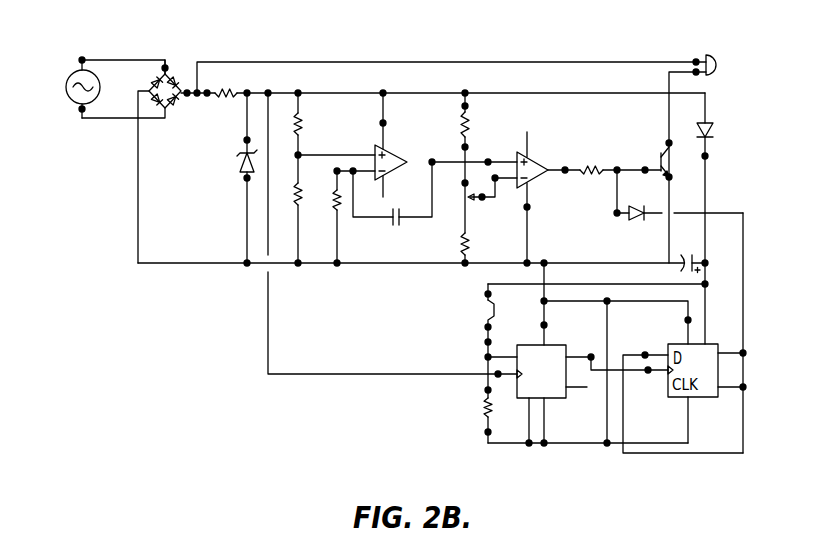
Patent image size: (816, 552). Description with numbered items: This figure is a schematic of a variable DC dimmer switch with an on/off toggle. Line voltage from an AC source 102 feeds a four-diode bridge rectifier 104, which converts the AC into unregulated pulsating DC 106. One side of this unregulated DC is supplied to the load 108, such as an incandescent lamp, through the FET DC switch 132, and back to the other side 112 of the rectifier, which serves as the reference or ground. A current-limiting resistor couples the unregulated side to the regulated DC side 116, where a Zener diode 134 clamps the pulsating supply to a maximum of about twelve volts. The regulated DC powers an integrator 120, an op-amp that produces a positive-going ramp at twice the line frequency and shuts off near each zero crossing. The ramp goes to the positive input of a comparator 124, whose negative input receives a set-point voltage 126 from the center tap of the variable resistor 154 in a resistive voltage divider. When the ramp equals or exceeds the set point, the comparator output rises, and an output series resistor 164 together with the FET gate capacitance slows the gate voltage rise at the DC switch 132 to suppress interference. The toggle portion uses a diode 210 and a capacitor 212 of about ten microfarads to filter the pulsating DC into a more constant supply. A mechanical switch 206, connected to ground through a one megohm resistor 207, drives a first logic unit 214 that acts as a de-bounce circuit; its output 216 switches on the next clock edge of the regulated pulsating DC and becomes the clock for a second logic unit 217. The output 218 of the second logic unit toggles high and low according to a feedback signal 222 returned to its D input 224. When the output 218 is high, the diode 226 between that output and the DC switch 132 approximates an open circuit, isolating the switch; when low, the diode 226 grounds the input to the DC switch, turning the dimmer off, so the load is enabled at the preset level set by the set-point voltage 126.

The AC source 102 is at (71, 69).
The bridge rectifier 104 is at (186, 53).
The unregulated pulsating DC 106 is at (458, 61).
The load 108 is at (718, 57).
The other side of the bridge rectifier 112 is at (178, 265).
The regulated DC side 116 is at (540, 93).
The integrator 120 is at (410, 135).
The comparator 124 is at (555, 148).
The set-point voltage 126 is at (484, 200).
The FET DC switch 132 is at (659, 173).
The Zener diode 134 is at (238, 157).
The variable resistor 154 is at (457, 203).
The output series resistor 164 is at (584, 174).
The mechanical switch 206 is at (485, 303).
The resistor 207 is at (484, 410).
The diode 210 is at (712, 132).
The capacitor 212 is at (700, 256).
The first logic unit 214 is at (549, 346).
The output of the first logic unit 216 is at (613, 373).
The second logic unit 217 is at (724, 384).
The output of the second logic unit 218 is at (745, 322).
The feedback signal 222 is at (744, 420).
The D input 224 is at (645, 352).
The diode 226 is at (637, 220).